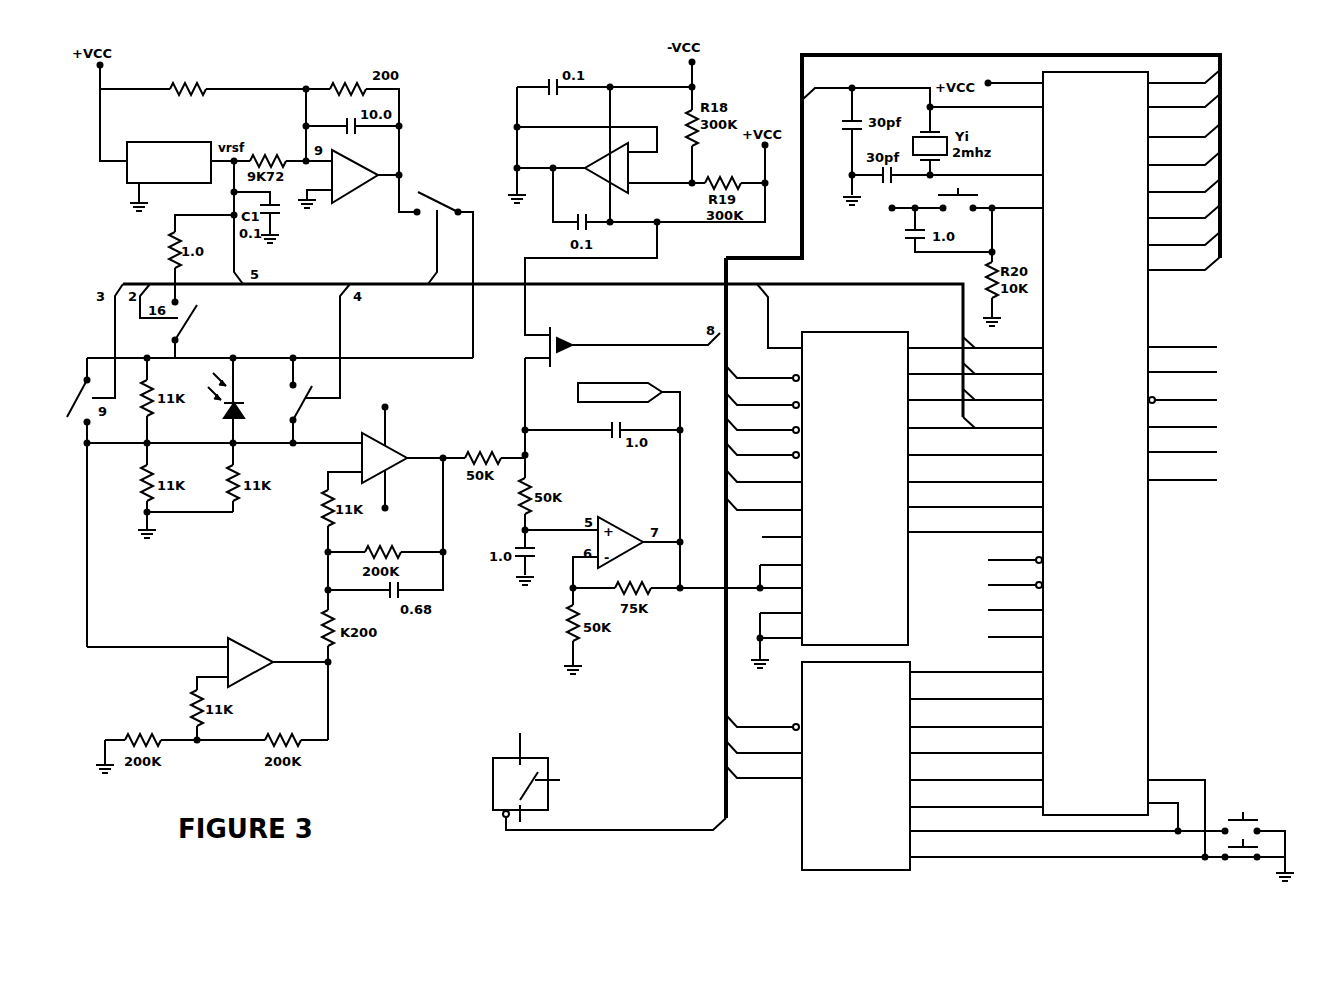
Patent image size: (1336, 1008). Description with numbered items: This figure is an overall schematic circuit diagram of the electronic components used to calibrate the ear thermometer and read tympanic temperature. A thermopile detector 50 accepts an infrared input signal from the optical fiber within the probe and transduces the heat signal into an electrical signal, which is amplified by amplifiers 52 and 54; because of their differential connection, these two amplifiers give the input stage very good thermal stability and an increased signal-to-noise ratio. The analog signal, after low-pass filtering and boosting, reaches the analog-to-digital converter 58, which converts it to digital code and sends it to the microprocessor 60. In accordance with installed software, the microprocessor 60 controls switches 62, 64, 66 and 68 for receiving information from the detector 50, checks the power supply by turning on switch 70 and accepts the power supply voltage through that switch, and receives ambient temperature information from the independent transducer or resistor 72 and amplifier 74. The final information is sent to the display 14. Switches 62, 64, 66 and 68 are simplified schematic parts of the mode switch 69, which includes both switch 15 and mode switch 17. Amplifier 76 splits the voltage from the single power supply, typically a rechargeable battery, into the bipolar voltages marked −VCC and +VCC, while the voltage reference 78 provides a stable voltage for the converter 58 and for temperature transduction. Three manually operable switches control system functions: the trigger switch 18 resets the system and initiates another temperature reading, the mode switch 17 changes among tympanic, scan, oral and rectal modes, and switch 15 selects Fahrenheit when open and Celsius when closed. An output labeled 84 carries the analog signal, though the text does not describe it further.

The transducer or resistor 72 is at (192, 89).
The voltage reference 78 is at (168, 142).
The amplifier 74 is at (366, 184).
The switch 62 is at (437, 193).
The switch 64 is at (199, 314).
The switch 66 is at (70, 392).
The switch 68 is at (305, 401).
The thermopile detector 50 is at (246, 415).
The amplifier 52 is at (401, 465).
The amplifier 54 is at (248, 641).
The amplifier 76 is at (610, 158).
The switch 70 is at (556, 340).
The analog signal output 84 is at (594, 383).
The analog-to-digital converter 58 is at (910, 602).
The microprocessor 60 is at (1148, 562).
The display 14 is at (802, 827).
The trigger switch 18 is at (950, 197).
The mode switch 17 is at (1252, 815).
The switch 15 is at (1231, 861).
The mode switch 69 is at (493, 770).